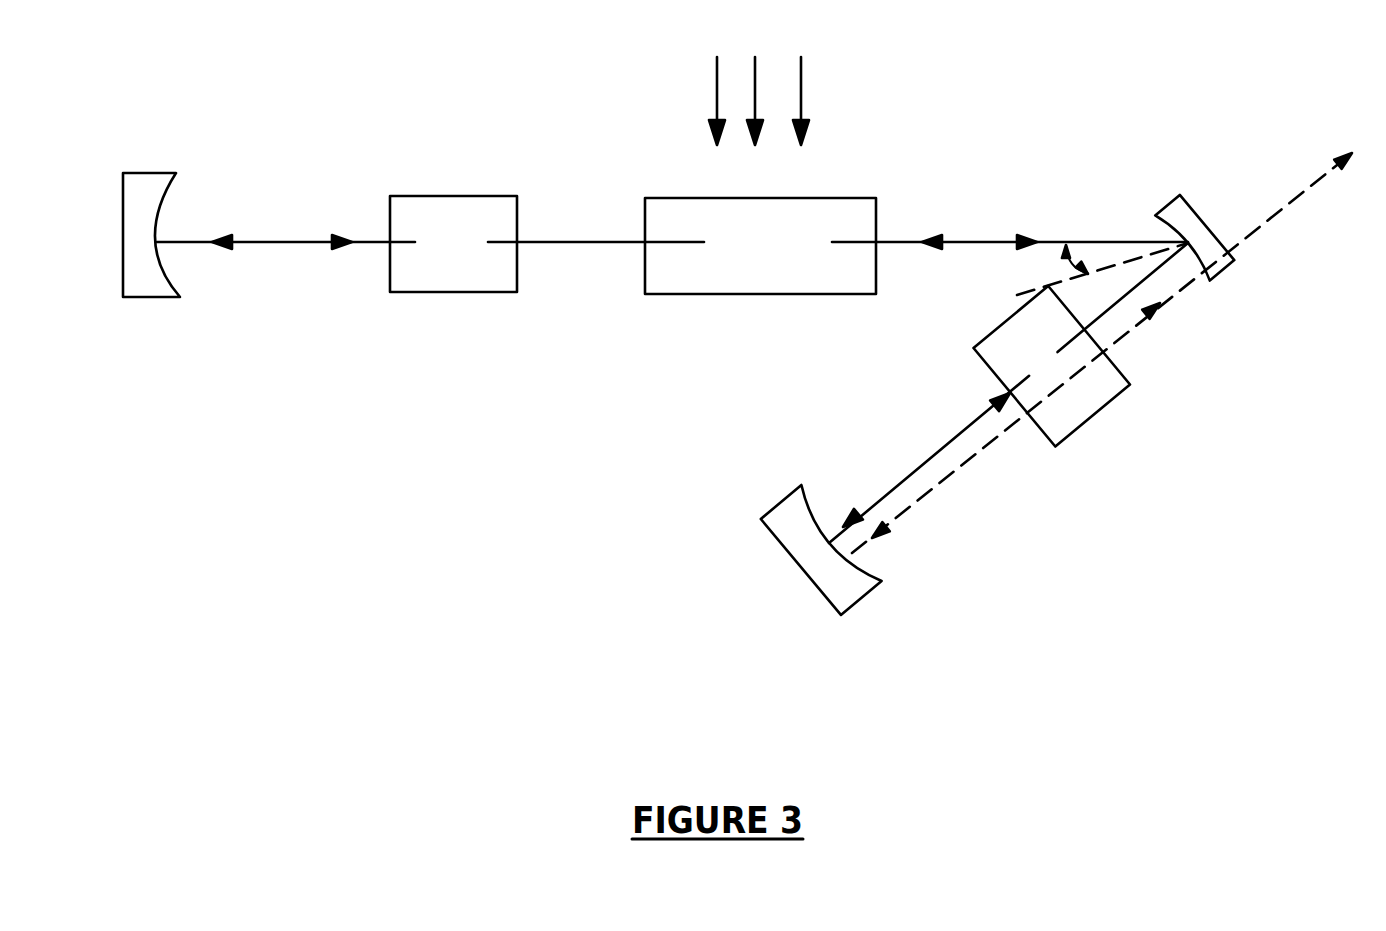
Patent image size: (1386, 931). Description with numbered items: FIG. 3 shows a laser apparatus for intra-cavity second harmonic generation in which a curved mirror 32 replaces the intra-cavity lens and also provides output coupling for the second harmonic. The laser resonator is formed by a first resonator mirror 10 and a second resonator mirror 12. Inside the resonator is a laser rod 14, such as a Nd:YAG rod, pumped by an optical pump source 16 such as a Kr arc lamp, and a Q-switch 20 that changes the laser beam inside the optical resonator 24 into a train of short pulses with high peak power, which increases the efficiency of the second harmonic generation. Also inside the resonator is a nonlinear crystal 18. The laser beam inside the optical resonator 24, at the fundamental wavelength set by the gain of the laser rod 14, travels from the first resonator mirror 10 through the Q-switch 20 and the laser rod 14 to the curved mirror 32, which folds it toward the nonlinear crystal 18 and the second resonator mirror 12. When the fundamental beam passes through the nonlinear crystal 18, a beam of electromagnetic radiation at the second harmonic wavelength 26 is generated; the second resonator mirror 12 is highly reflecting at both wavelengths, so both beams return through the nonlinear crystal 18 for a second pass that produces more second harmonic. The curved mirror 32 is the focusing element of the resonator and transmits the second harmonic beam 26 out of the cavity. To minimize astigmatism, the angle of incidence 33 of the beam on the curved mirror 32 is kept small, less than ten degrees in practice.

The first resonator mirror 10 is at (134, 174).
The second resonator mirror 12 is at (847, 597).
The laser rod 14 is at (820, 197).
The optical pump source 16 is at (801, 78).
The nonlinear crystal 18 is at (1128, 390).
The Q-switch 20 is at (423, 200).
The laser beam inside the optical resonator 24 is at (950, 241).
The beam of electromagnetic radiation at the second harmonic wavelength 26 is at (915, 500).
The curved mirror 32 is at (1192, 226).
The angle of incidence 33 is at (1080, 260).